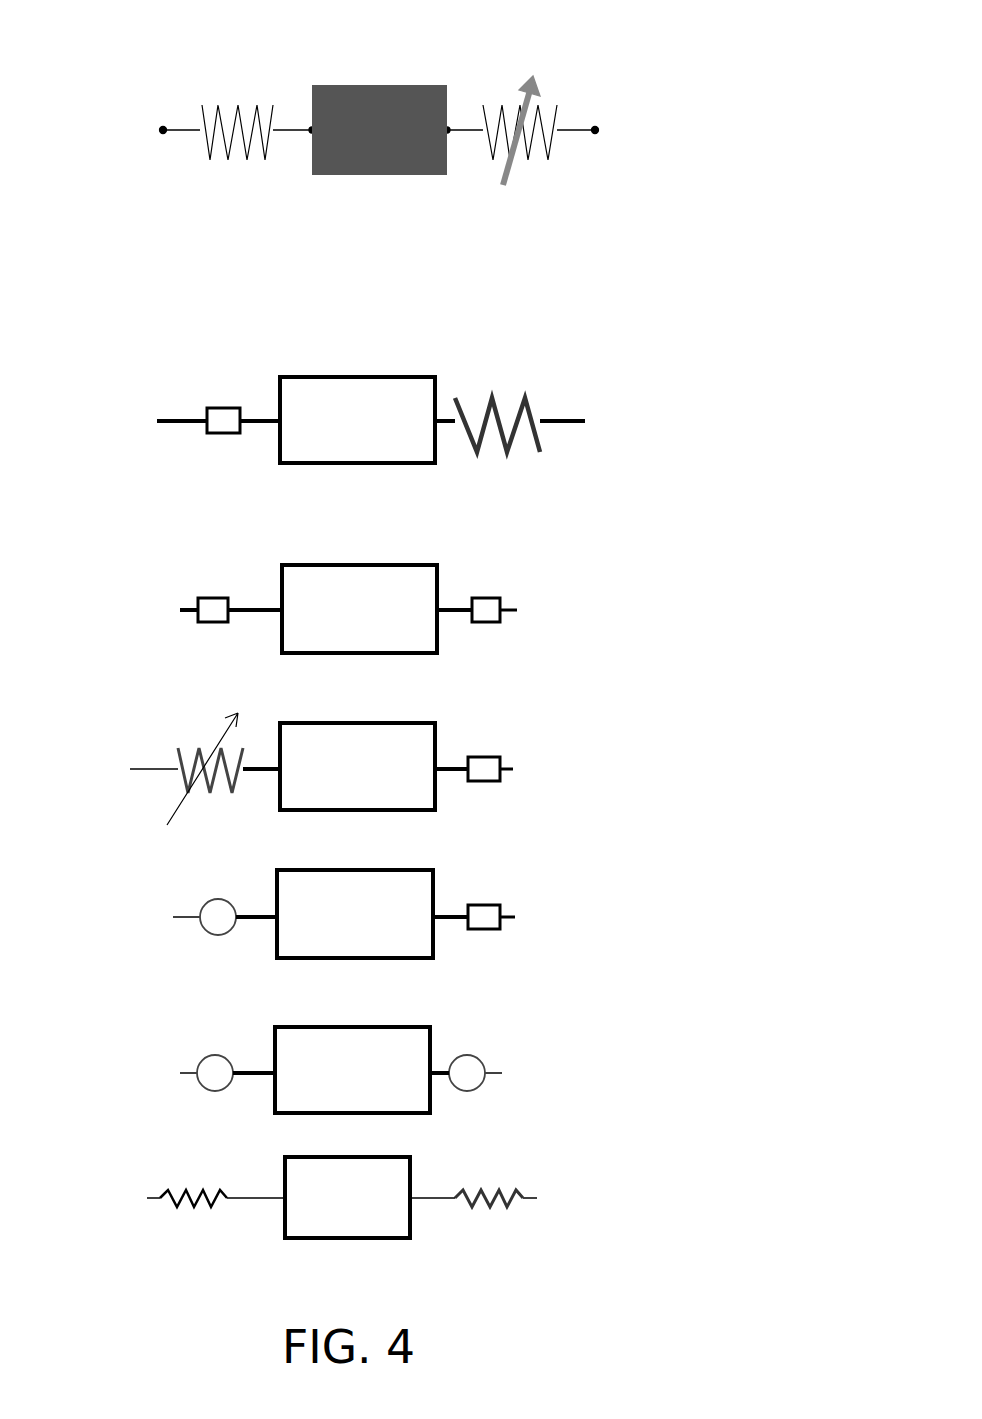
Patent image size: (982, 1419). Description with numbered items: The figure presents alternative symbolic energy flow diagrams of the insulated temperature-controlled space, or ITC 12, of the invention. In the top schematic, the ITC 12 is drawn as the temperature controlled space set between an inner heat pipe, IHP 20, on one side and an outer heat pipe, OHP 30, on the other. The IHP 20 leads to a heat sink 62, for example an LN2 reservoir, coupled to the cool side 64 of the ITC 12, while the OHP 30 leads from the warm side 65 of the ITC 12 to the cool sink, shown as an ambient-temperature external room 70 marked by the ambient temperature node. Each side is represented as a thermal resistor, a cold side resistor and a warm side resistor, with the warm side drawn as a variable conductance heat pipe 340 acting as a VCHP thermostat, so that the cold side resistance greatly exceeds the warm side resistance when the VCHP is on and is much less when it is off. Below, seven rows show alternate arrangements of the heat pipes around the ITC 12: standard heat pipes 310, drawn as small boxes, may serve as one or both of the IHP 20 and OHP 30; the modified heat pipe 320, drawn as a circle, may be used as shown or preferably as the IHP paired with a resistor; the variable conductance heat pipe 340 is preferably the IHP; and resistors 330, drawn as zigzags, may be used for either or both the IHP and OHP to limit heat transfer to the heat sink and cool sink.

The ITC 12 is at (370, 83).
The IHP 20 is at (183, 90).
The OHP 30 is at (575, 102).
The heat sink 62 is at (163, 137).
The cool sink 64 is at (637, 117).
The warm side 65 is at (603, 135).
The external room 70 is at (793, 81).
The standard heat pipe 310 is at (243, 433).
The modified heat pipe 320 is at (200, 928).
The resistor 330 is at (245, 97).
The variable conductance heat pipe 340 is at (558, 150).